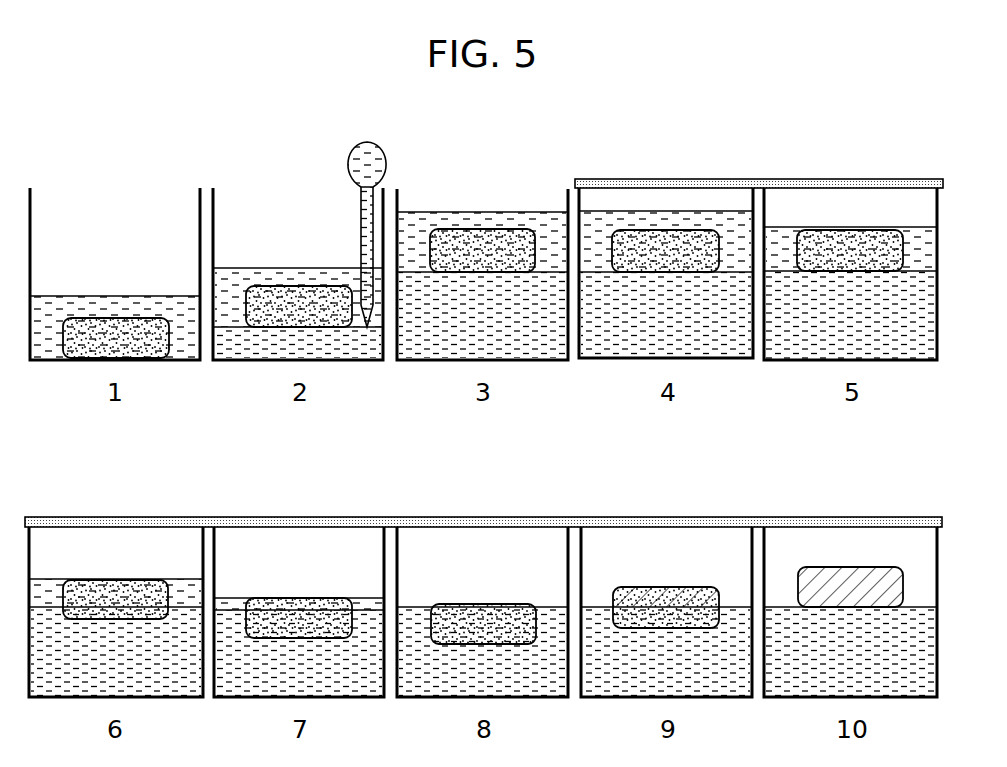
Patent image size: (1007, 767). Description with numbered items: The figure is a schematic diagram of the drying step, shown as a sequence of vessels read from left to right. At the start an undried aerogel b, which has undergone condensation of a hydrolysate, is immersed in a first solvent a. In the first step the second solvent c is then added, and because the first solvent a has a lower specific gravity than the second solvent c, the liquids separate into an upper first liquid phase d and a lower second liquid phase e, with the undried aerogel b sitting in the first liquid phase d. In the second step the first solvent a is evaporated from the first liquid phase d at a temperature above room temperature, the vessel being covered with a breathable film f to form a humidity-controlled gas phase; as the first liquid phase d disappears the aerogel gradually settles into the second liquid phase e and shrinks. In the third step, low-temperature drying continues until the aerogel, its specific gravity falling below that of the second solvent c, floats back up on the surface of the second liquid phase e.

The first solvent a is at (52, 306).
The undried aerogel b is at (113, 336).
The second solvent c is at (235, 344).
The first liquid phase d is at (418, 222).
The second liquid phase e is at (545, 350).
The breathable film f is at (608, 179).
The dried porous body g is at (850, 580).